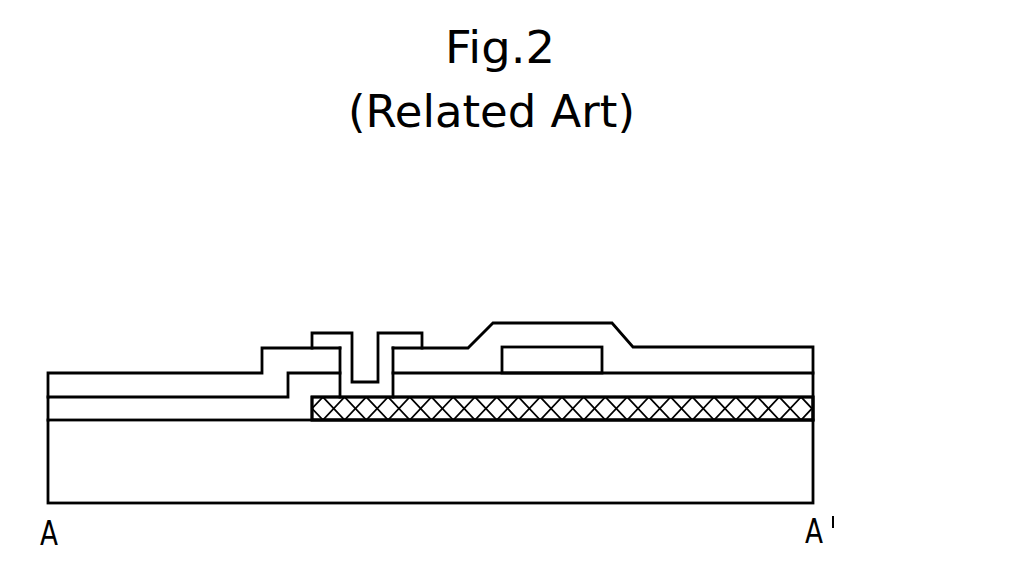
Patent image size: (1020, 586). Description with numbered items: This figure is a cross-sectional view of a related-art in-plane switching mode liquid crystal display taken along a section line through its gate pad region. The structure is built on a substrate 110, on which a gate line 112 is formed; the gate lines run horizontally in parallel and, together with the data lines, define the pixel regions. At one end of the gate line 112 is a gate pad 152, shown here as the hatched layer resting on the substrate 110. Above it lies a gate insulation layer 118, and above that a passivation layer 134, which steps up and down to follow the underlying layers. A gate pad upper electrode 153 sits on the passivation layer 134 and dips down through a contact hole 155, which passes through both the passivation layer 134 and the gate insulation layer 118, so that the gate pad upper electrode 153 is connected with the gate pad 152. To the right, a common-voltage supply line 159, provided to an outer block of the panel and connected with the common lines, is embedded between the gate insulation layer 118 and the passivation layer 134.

The substrate 110 is at (803, 472).
The gate line 112 is at (803, 410).
The gate insulation layer 118 is at (803, 383).
The passivation layer 134 is at (803, 356).
The gate pad 152 is at (365, 420).
The gate pad upper electrode 153 is at (406, 333).
The contact hole 155 is at (366, 328).
The common-voltage supply line 159 is at (568, 358).